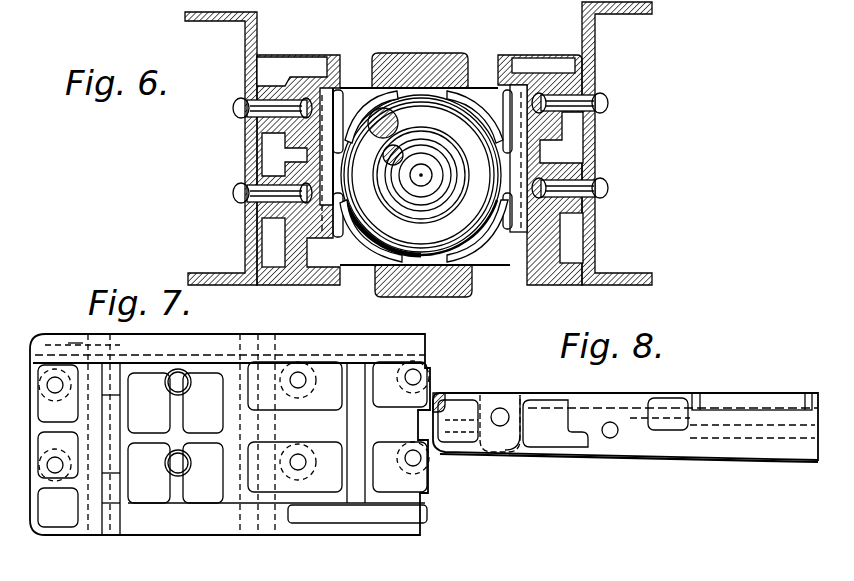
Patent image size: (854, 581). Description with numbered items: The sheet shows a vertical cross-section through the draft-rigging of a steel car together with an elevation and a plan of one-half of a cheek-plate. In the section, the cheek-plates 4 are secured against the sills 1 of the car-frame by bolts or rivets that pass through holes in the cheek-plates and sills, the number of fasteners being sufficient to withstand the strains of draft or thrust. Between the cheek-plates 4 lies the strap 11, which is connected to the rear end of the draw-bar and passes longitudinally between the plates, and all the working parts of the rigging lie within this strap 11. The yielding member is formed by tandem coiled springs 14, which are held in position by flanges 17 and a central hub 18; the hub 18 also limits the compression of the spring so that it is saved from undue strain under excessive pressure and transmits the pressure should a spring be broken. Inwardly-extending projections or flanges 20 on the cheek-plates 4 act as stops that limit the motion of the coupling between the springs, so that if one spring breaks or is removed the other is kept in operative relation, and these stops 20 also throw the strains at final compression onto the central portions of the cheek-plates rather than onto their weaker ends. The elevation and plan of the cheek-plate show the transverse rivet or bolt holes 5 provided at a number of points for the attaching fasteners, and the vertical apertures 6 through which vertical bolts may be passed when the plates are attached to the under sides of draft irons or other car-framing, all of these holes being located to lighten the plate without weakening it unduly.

In FIG. 6, the sills 1 is at (596, 50).
In FIG. 6, the cheek-plates 4 is at (338, 63).
In FIG. 7, the cheek-plates 4 is at (230, 448).
In FIG. 8, the cheek-plates 4 is at (625, 415).
In FIG. 6, the transverse rivet or bolt holes 5 is at (243, 217).
In FIG. 7, the transverse rivet or bolt holes 5 is at (415, 375).
In FIG. 7, the vertical apertures 6 is at (92, 330).
In FIG. 8, the vertical apertures 6 is at (518, 400).
In FIG. 6, the strap 11 is at (422, 173).
In FIG. 6, the springs 14 is at (422, 172).
In FIG. 6, the flanges 17 is at (470, 88).
In FIG. 6, the central hub 18 is at (437, 156).
In FIG. 6, the inwardly-extending projections or flanges (stops) 20 is at (348, 240).